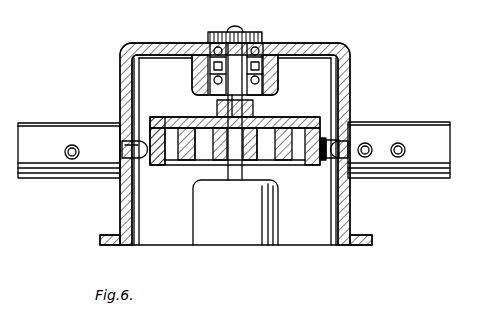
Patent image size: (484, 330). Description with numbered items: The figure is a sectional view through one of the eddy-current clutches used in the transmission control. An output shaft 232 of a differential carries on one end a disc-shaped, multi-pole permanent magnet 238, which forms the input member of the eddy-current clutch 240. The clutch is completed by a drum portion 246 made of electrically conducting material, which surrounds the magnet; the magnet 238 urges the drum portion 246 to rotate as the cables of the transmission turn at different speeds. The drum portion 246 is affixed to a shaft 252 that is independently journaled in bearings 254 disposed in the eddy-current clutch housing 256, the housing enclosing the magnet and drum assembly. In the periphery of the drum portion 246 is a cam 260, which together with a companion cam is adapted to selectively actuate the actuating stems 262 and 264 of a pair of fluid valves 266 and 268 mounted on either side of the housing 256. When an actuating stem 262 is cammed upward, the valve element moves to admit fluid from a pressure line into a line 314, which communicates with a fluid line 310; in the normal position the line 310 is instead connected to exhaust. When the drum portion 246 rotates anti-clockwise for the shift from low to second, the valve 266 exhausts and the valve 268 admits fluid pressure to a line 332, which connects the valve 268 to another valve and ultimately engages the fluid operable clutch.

The output shaft 232 is at (233, 172).
The multi-pole permanent magnet 238 is at (207, 150).
The eddy-current clutch 240 is at (322, 108).
The drum portion 246 is at (167, 120).
The shaft 252 is at (238, 40).
The bearing 254 is at (259, 55).
The eddy-current clutch housing 256 is at (350, 68).
The cam 260 is at (332, 140).
The actuating stem 262 is at (342, 148).
The actuating stem 264 is at (128, 152).
The fluid valve 266 is at (435, 127).
The fluid valve 268 is at (50, 127).
The fluid line 310 is at (399, 158).
The line 314 is at (365, 158).
The line 332 is at (73, 144).